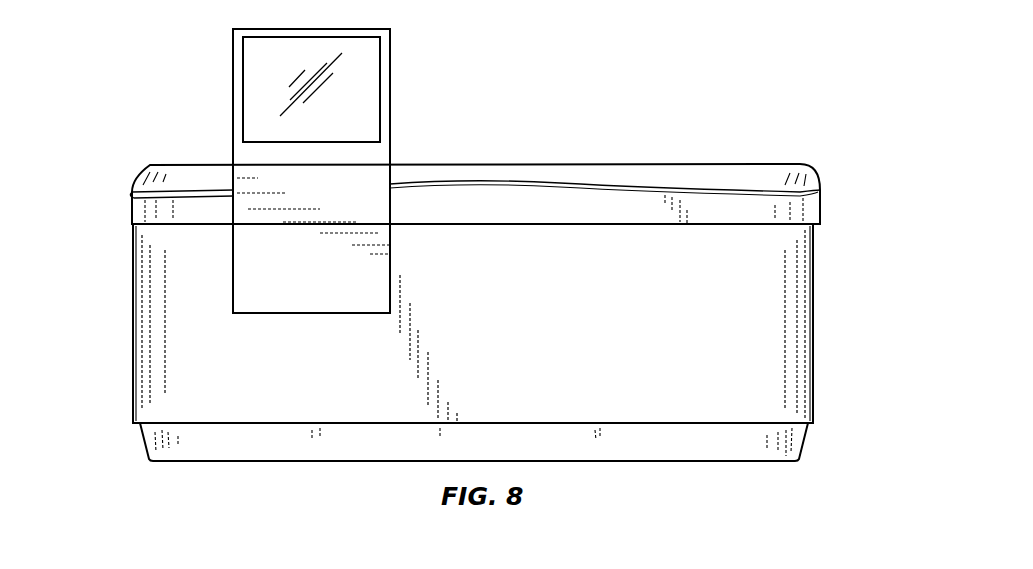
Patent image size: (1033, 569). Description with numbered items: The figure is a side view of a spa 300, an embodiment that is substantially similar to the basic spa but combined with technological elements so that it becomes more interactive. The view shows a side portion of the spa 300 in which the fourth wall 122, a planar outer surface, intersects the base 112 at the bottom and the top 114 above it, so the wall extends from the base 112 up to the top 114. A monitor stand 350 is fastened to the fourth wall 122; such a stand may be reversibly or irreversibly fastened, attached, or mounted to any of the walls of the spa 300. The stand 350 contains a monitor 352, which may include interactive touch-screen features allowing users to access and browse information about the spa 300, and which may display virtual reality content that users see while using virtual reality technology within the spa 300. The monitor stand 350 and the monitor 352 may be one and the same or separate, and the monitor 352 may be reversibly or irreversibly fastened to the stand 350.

The spa 300 is at (153, 101).
The monitor stand 350 is at (363, 170).
The monitor 352 is at (345, 77).
The top 114 is at (112, 166).
The fourth spa wall 122 is at (697, 320).
The base 112 is at (120, 426).